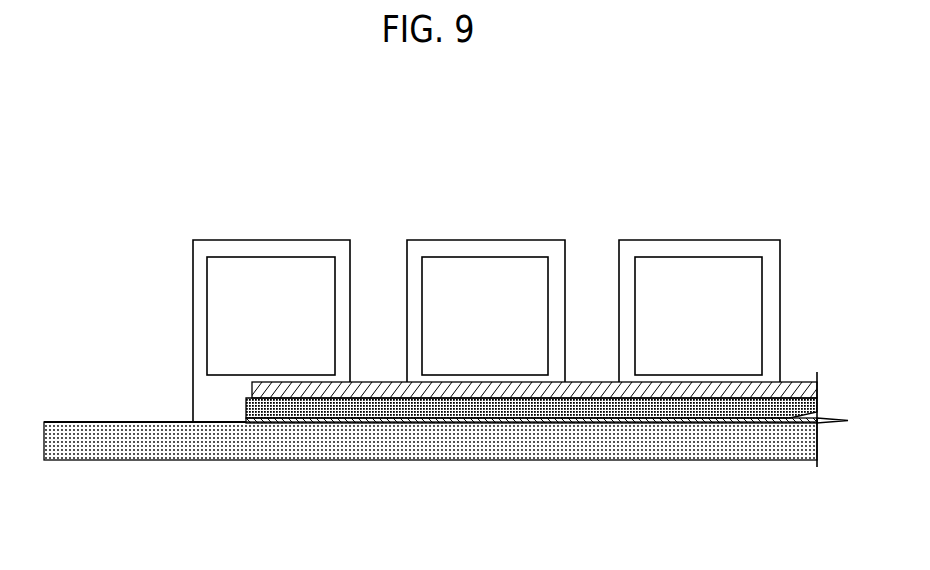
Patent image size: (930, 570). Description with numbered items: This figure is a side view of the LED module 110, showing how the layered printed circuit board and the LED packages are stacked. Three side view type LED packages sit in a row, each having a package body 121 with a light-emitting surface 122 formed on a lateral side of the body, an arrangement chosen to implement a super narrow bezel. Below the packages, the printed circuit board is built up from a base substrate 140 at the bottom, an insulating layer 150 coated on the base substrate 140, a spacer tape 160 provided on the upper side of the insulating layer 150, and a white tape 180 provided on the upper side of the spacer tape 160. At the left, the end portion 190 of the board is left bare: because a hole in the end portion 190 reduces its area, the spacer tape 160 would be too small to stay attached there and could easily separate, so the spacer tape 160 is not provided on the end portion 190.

The LED module 110 is at (383, 109).
The package body 121 is at (560, 240).
The light-emitting surface 122 is at (484, 288).
The base substrate 140 is at (552, 440).
The insulating layer 150 is at (470, 421).
The spacer tape 160 is at (392, 415).
The white tape 180 is at (290, 390).
The end portion 190 is at (98, 420).